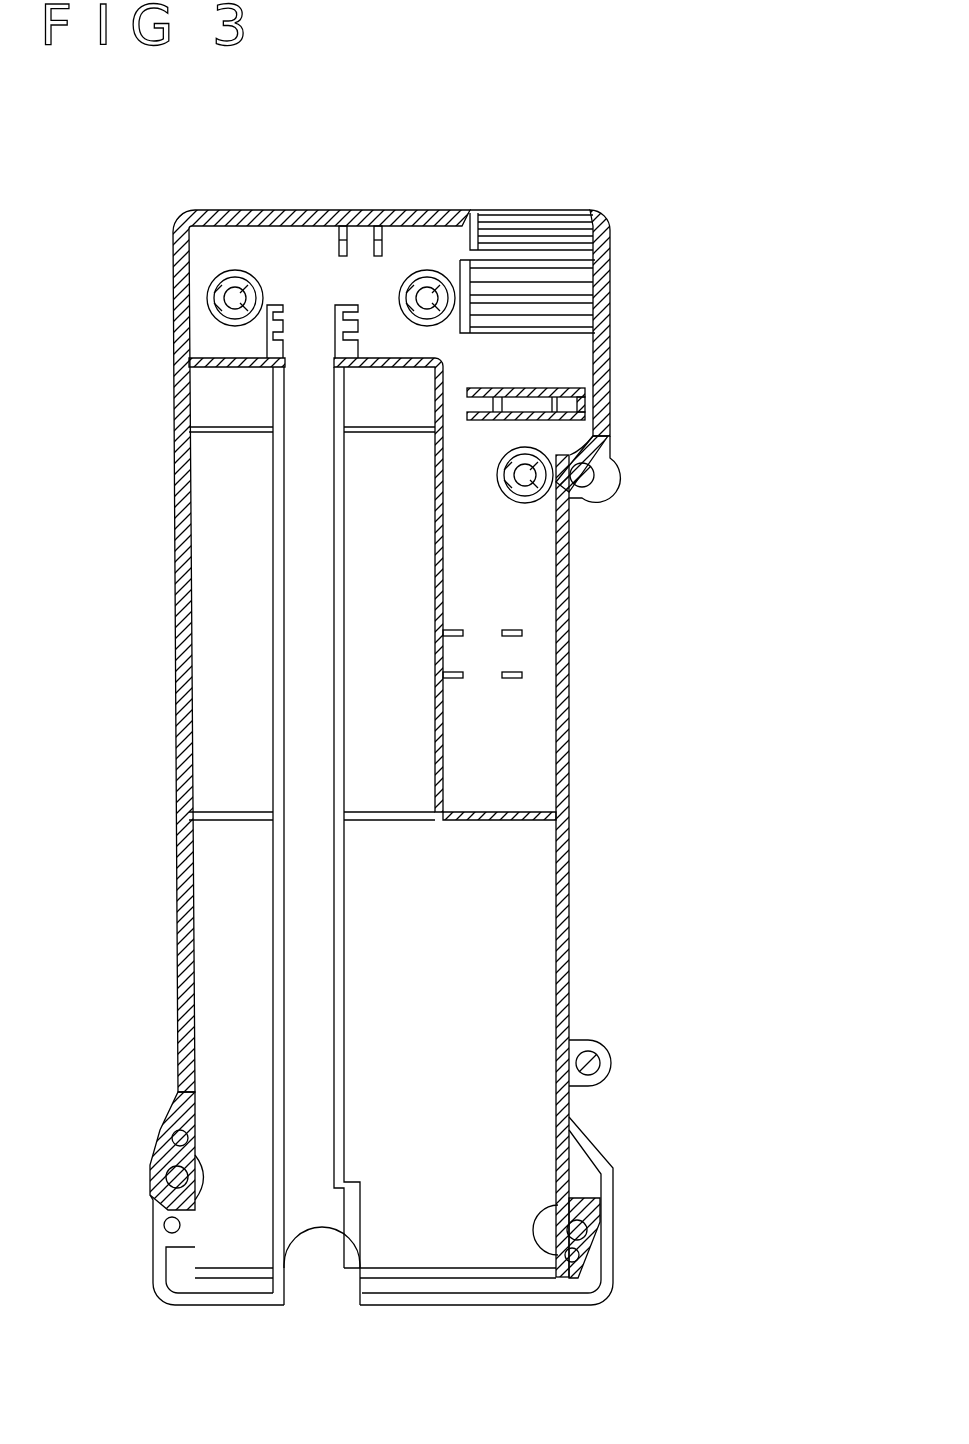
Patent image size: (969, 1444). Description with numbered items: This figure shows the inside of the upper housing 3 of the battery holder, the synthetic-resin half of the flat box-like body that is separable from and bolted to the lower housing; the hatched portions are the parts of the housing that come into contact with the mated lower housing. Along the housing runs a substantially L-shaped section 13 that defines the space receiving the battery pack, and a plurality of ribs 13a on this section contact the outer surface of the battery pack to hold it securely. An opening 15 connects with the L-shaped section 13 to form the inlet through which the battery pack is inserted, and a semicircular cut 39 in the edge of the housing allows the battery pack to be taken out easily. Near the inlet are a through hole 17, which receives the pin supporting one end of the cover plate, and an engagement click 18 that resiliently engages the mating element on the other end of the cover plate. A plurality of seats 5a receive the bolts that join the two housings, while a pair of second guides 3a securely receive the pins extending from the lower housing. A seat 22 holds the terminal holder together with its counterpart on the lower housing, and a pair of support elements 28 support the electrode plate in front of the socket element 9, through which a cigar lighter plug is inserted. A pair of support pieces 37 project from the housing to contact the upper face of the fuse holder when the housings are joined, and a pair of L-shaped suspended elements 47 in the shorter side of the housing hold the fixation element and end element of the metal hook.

The upper housing 3 is at (610, 330).
The second guide 3a is at (597, 474).
The seat 5a is at (424, 290).
The socket element 9 is at (533, 214).
The substantially L-shaped section 13 is at (222, 613).
The rib 13a is at (275, 765).
The opening 15 is at (415, 1272).
The through hole 17 is at (164, 1225).
The engagement click 18 is at (600, 1214).
The seat 22 is at (266, 346).
The support element 28 is at (586, 413).
The support piece 37 is at (510, 630).
The semicircular cut 39 is at (313, 1258).
The L-shaped suspended element 47 is at (343, 225).